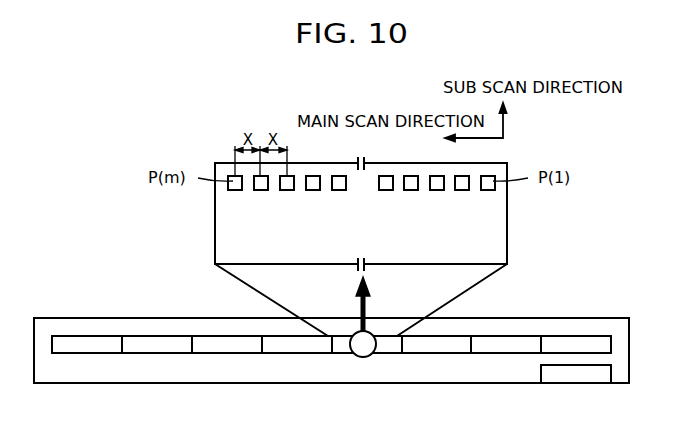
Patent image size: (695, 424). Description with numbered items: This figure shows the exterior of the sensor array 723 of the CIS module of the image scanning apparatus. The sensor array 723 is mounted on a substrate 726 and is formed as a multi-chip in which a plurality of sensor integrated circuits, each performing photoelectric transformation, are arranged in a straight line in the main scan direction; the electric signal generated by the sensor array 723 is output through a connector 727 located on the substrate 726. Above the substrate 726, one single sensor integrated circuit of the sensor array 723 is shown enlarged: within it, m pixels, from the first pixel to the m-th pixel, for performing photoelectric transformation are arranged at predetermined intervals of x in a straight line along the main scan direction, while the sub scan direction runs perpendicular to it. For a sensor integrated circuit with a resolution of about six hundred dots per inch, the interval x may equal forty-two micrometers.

The sensor array 723 is at (605, 343).
The substrate 726 is at (618, 360).
The connector 727 is at (599, 377).